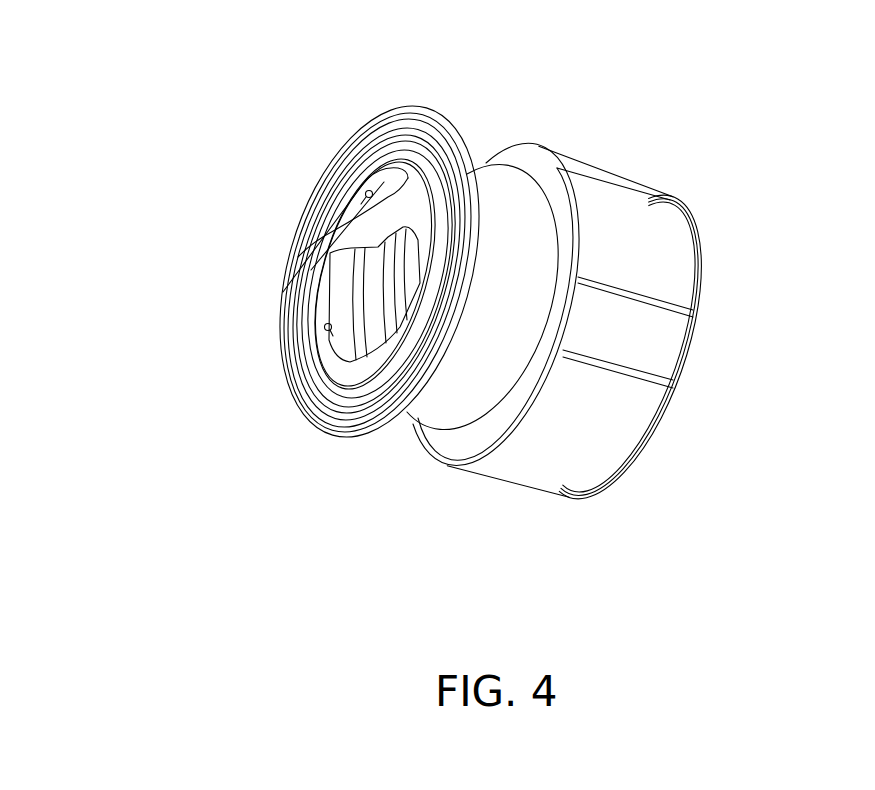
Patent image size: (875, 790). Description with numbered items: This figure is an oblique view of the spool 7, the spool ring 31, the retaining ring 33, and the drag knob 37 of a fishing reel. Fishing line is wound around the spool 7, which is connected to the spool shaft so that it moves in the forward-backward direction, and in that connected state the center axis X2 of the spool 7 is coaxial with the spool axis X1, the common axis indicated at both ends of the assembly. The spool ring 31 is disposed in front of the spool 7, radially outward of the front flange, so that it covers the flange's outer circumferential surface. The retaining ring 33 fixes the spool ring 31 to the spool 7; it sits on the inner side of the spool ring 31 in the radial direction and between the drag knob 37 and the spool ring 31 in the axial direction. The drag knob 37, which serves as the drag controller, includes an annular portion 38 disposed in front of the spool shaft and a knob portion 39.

The spool 7 is at (678, 170).
The spool ring 31 is at (373, 417).
The retaining ring 33 is at (327, 408).
The drag knob 37 is at (371, 66).
The annular portion 38 is at (385, 158).
The knob portion 39 is at (323, 243).
The spool axis X1 is at (262, 242).
The center axis of the spool X2 is at (705, 367).